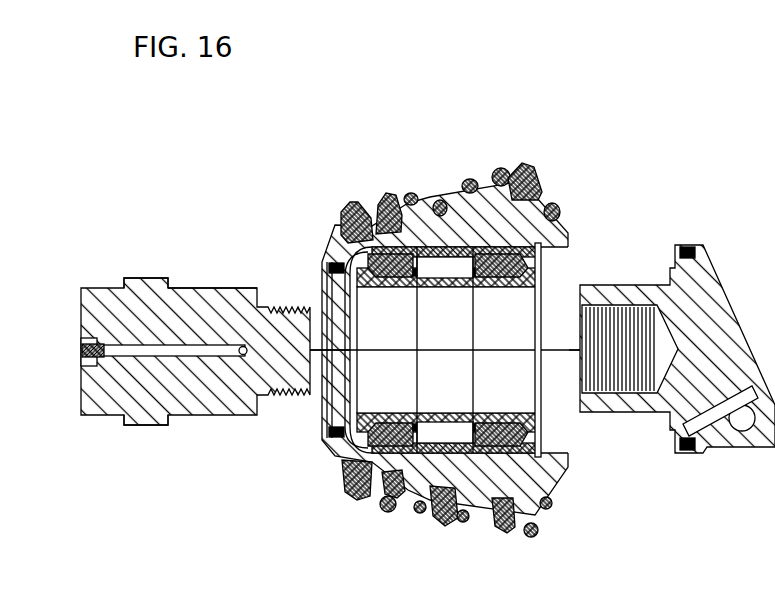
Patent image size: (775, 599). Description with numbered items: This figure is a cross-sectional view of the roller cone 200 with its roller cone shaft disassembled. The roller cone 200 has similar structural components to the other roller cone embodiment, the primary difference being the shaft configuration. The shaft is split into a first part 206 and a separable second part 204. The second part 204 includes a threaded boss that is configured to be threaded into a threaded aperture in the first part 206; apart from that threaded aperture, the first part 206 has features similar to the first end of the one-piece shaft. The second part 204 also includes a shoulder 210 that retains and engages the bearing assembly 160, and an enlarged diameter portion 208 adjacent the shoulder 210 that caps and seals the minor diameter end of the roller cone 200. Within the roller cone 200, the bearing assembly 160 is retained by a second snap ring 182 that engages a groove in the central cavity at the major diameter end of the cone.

The roller cone 200 is at (480, 318).
The second part 204 is at (195, 373).
The first part 206 is at (691, 472).
The enlarged diameter portion 208 is at (145, 280).
The shoulder 210 is at (171, 286).
The second snap ring 182 is at (542, 258).
The bearing assembly 160 is at (468, 400).